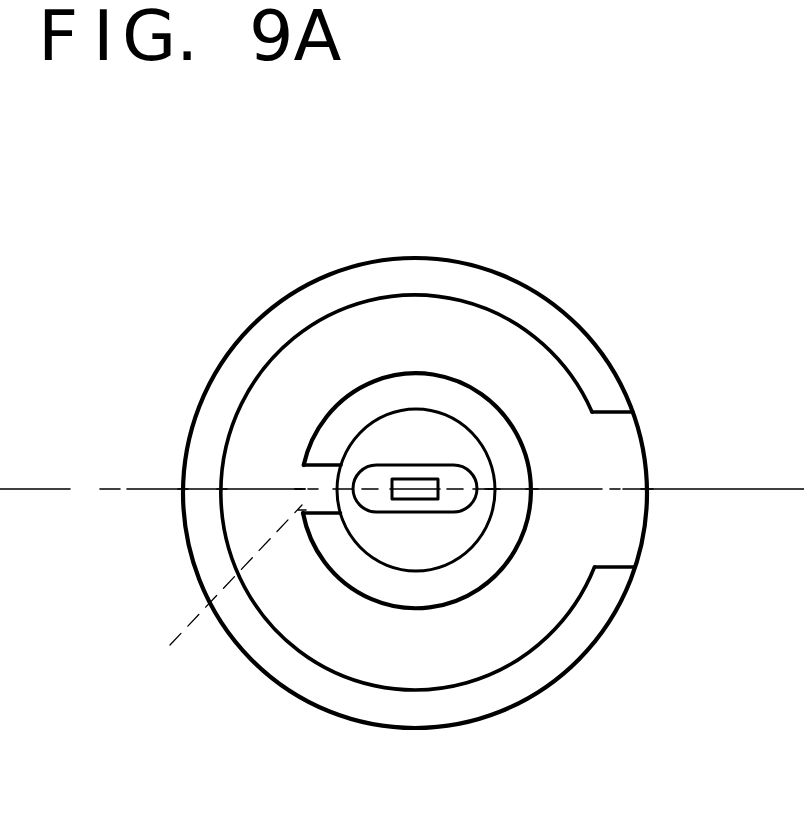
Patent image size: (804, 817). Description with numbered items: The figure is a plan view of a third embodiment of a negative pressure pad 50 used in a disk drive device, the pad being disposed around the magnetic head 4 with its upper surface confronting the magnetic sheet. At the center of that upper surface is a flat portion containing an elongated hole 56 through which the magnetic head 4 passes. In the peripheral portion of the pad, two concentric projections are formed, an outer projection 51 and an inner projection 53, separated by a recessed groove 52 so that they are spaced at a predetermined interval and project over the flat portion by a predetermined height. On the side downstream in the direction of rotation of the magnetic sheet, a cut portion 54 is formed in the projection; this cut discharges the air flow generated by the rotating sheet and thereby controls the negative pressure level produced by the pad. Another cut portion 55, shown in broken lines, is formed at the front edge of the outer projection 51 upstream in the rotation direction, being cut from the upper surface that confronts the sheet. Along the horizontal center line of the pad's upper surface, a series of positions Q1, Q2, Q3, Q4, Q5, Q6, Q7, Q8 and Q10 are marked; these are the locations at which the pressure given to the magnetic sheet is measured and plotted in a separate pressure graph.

The negative pressure pad 50 is at (498, 270).
The outer projection 51 is at (553, 307).
The recessed groove 52 is at (558, 387).
The inner projection 53 is at (345, 407).
The cut portion 54 is at (620, 455).
The cut portion 55 is at (215, 590).
The elongated hole 56 is at (435, 468).
The magnetic head 4 is at (401, 497).
The position Q1 is at (183, 489).
The position Q2 is at (222, 489).
The position Q3 is at (297, 487).
The position Q4 is at (299, 508).
The position Q5 is at (300, 487).
The position Q6 is at (496, 492).
The position Q7 is at (488, 492).
The position Q8 is at (533, 491).
The position Q10 is at (647, 491).